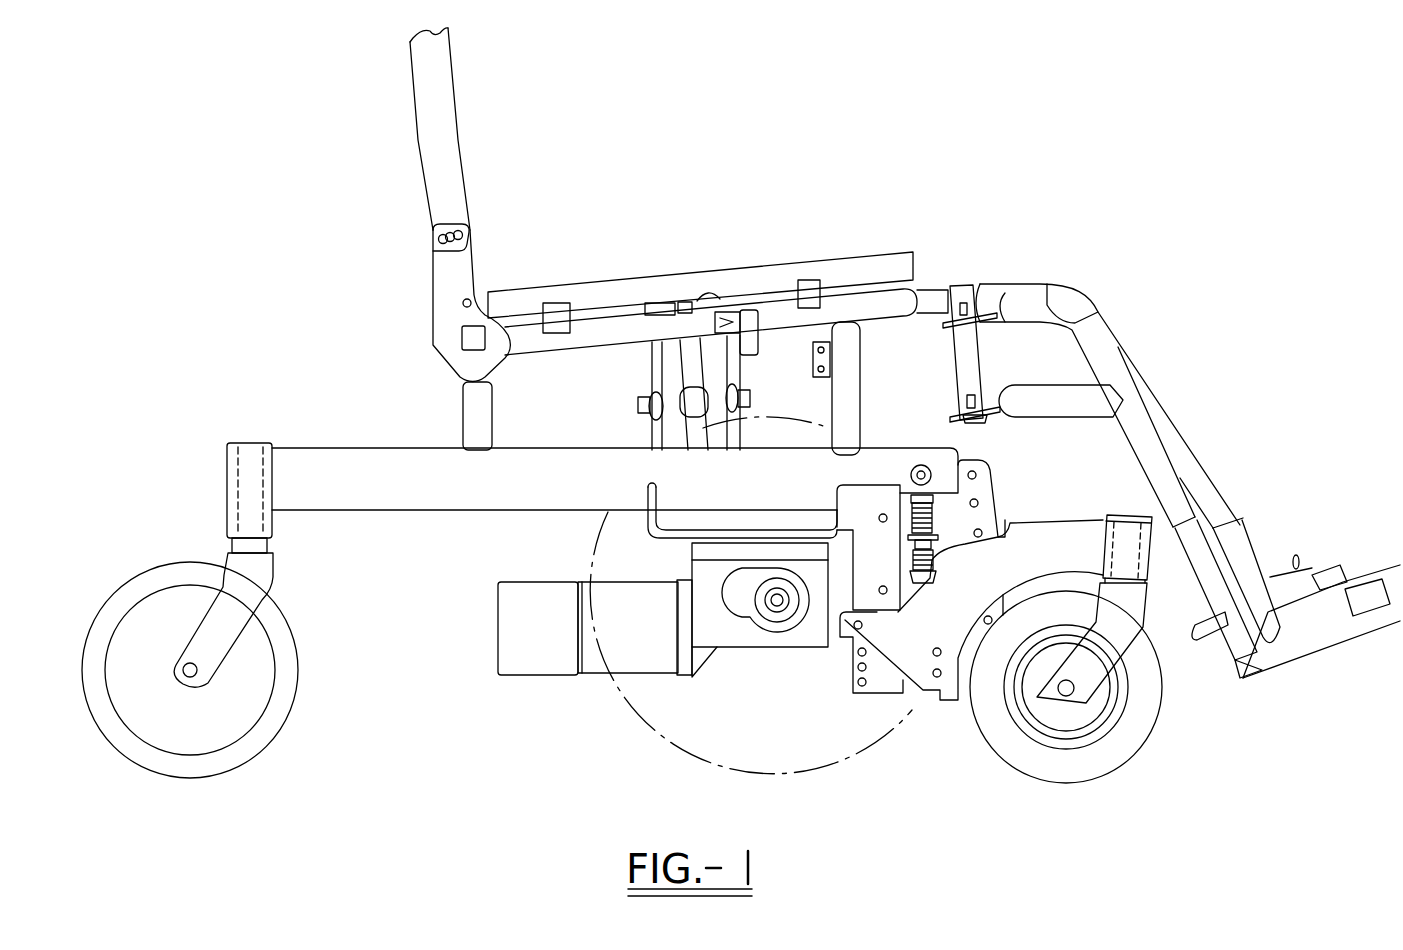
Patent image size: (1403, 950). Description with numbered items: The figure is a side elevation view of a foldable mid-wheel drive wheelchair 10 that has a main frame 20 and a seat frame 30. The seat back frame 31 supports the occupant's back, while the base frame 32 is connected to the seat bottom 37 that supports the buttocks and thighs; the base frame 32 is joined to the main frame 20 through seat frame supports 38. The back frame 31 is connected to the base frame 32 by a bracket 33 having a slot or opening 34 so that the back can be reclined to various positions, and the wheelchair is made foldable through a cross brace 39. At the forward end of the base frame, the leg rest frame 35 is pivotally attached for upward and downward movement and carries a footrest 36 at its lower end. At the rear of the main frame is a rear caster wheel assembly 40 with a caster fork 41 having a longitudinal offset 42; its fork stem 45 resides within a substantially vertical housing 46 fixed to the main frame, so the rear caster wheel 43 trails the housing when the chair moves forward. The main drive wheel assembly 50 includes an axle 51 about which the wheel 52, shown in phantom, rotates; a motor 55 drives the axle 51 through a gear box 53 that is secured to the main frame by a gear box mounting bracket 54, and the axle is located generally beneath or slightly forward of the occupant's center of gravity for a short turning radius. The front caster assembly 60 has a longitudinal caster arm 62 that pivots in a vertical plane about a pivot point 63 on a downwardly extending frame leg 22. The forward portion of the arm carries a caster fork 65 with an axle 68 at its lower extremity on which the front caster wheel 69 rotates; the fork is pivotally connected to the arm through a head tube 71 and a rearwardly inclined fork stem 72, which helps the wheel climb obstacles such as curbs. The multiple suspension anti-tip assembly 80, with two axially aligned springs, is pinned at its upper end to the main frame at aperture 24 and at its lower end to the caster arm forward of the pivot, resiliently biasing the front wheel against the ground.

The wheelchair 10 is at (905, 190).
The main frame 20 is at (395, 443).
The frame leg 22 is at (858, 497).
The aperture 24 is at (921, 465).
The seat frame 30 is at (413, 220).
The seat back frame 31 is at (459, 148).
The base frame 32 is at (638, 315).
The bracket 33 is at (440, 288).
The slot or opening 34 is at (432, 238).
The leg rest frame 35 is at (1183, 438).
The footrest 36 is at (1315, 647).
The seat bottom 37 is at (738, 268).
The seat frame supports 38 is at (492, 406).
The cross brace 39 is at (645, 366).
The rear caster wheel assembly 40 is at (222, 460).
The caster fork 41 is at (250, 603).
The longitudinal offset 42 is at (222, 655).
The rear caster wheel 43 is at (272, 733).
The fork stem 45 is at (242, 506).
The housing 46 is at (228, 484).
The main drive wheel assembly 50 is at (632, 737).
The axle 51 is at (778, 603).
The wheel 52 is at (610, 707).
The gear box 53 is at (725, 632).
The gear box mounting bracket 54 is at (648, 532).
The motor 55 is at (500, 660).
The front caster assembly 60 is at (1172, 715).
The caster arm 62 is at (948, 598).
The pivot point 63 is at (855, 627).
The caster fork 65 is at (1115, 650).
The axle 68 is at (1062, 690).
The front caster wheel 69 is at (1130, 757).
The head tube 71 is at (1125, 513).
The fork stem 72 is at (1142, 560).
The multiple suspension anti-tip assembly 80 is at (945, 527).